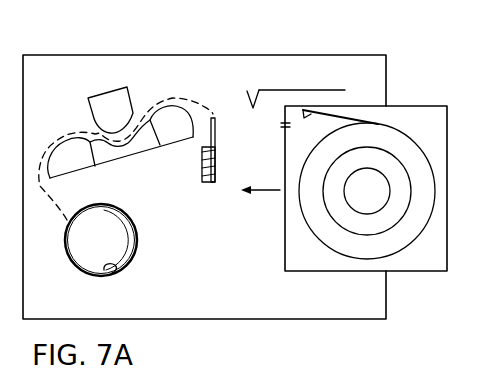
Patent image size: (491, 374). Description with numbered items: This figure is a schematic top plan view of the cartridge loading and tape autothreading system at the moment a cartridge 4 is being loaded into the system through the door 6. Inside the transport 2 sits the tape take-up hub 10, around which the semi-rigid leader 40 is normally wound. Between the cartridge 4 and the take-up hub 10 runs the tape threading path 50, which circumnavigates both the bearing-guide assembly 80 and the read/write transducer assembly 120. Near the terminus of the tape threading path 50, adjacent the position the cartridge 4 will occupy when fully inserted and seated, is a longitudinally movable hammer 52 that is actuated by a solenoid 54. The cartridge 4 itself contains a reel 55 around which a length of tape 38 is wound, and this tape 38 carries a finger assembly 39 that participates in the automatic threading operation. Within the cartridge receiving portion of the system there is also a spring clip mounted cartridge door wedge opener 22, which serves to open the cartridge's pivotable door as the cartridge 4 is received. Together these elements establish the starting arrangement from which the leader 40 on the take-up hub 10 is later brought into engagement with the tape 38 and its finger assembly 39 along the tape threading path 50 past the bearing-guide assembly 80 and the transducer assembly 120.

The transport 2 is at (240, 319).
The cartridge 4 is at (408, 272).
The door 6 is at (386, 107).
The tape take-up hub 10 is at (116, 271).
The cartridge door wedge opener 22 is at (295, 90).
The tape 38 is at (368, 123).
The finger assembly 39 is at (312, 113).
The semi-rigid leader 40 is at (136, 230).
The tape threading path 50 is at (192, 103).
The hammer 52 is at (216, 133).
The solenoid 54 is at (203, 183).
The reel 55 is at (362, 225).
The bearing-guide assembly 80 is at (116, 167).
The read/write transducer assembly 120 is at (108, 102).